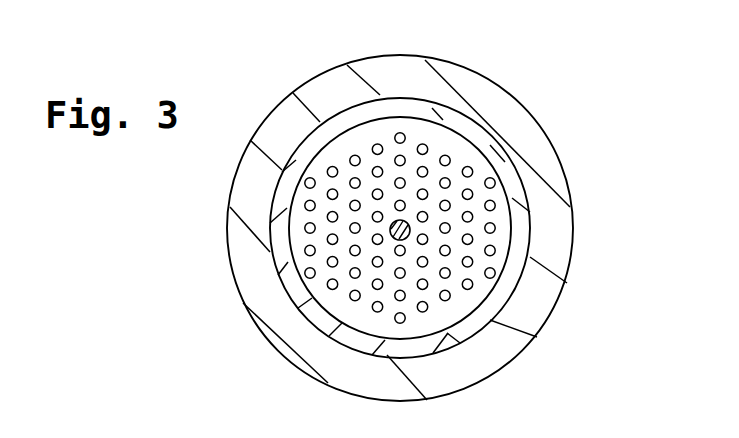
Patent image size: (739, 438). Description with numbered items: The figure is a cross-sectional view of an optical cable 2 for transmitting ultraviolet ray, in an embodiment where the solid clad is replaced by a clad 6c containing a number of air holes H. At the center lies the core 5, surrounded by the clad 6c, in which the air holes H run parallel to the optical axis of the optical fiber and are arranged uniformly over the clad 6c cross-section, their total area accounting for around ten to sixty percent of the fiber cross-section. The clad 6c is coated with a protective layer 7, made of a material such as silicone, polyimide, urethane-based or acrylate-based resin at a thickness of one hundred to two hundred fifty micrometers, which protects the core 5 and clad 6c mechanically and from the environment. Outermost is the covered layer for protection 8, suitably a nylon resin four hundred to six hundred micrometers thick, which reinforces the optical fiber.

The optical cable 2 is at (558, 125).
The core 5 is at (410, 224).
The clad 6c is at (443, 150).
The protective layer 7 is at (510, 279).
The covered layer for protection 8 is at (502, 347).
The air holes H is at (350, 158).